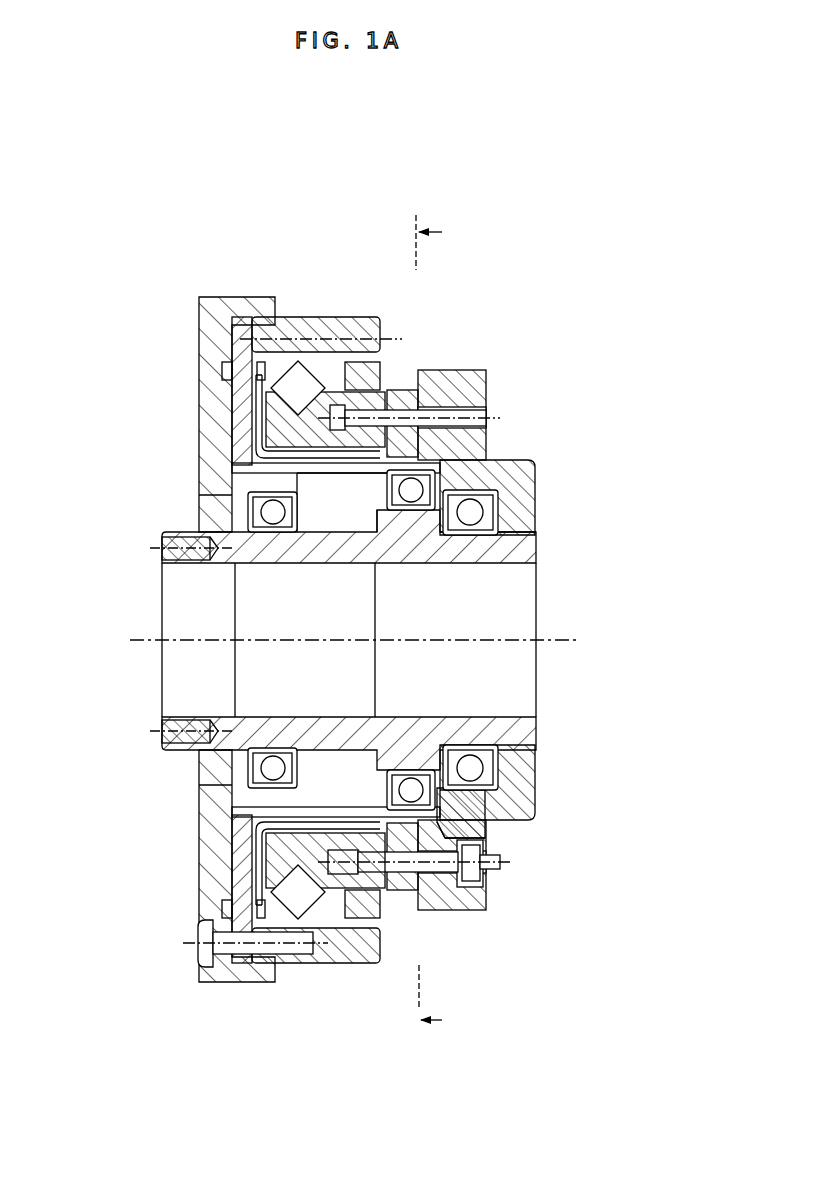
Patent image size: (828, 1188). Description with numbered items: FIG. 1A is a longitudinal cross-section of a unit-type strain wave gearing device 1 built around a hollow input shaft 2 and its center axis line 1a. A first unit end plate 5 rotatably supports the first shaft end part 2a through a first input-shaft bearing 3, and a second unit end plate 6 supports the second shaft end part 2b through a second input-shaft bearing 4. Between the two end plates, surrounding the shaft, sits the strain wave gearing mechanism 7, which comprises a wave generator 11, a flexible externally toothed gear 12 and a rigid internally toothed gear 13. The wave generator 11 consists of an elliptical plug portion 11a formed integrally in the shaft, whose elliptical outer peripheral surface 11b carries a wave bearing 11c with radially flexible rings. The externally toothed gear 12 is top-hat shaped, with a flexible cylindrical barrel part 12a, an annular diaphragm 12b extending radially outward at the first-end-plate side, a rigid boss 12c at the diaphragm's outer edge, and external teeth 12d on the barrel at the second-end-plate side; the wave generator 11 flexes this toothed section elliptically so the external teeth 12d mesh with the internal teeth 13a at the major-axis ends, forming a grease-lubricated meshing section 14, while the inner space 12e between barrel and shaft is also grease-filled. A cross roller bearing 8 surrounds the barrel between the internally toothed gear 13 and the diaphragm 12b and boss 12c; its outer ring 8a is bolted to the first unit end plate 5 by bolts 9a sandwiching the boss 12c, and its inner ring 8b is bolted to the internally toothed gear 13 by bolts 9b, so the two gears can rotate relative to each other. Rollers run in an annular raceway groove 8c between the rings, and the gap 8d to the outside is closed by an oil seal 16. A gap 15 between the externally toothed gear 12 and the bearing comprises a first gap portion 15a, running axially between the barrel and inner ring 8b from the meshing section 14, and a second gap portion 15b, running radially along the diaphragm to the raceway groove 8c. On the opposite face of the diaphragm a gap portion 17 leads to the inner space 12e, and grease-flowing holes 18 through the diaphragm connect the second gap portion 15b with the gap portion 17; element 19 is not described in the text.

The unit-type strain wave gearing device 1 is at (349, 265).
The center axis line 1a is at (146, 650).
The hollow input shaft 2 is at (380, 621).
The first shaft end part 2a is at (258, 552).
The second shaft end part 2b is at (468, 548).
The first input-shaft bearing 3 is at (240, 494).
The second input-shaft bearing 4 is at (509, 518).
The first unit end plate 5 is at (194, 452).
The second unit end plate 6 is at (500, 392).
The strain wave gearing mechanism 7 is at (490, 480).
The cross roller bearing 8 is at (288, 345).
The outer ring 8a is at (290, 362).
The inner ring 8b is at (238, 410).
The annular raceway groove 8c is at (305, 368).
The gap 8d is at (383, 358).
The bolts 9a is at (196, 953).
The bolts 9b is at (502, 878).
The wave generator 11 is at (555, 833).
The plug portion 11a is at (492, 793).
The elliptical outer peripheral surface 11b is at (486, 826).
The wave bearing 11c is at (490, 835).
The flexible externally toothed gear 12 is at (256, 841).
The cylindrical barrel part 12a is at (328, 800).
The diaphragm 12b is at (250, 853).
The rigid boss 12c is at (227, 898).
The external teeth 12d is at (398, 893).
The inner space 12e is at (386, 549).
The rigid internally toothed gear 13 is at (419, 825).
The internal teeth 13a is at (382, 808).
The meshing section 14 is at (454, 470).
The gap 15 is at (413, 440).
The first gap portion 15a is at (358, 504).
The second gap portion 15b is at (308, 474).
The oil seal 16 is at (390, 394).
The gap portion 17 is at (225, 432).
The grease-flowing holes 18 is at (240, 433).
The second plate 19 is at (233, 817).